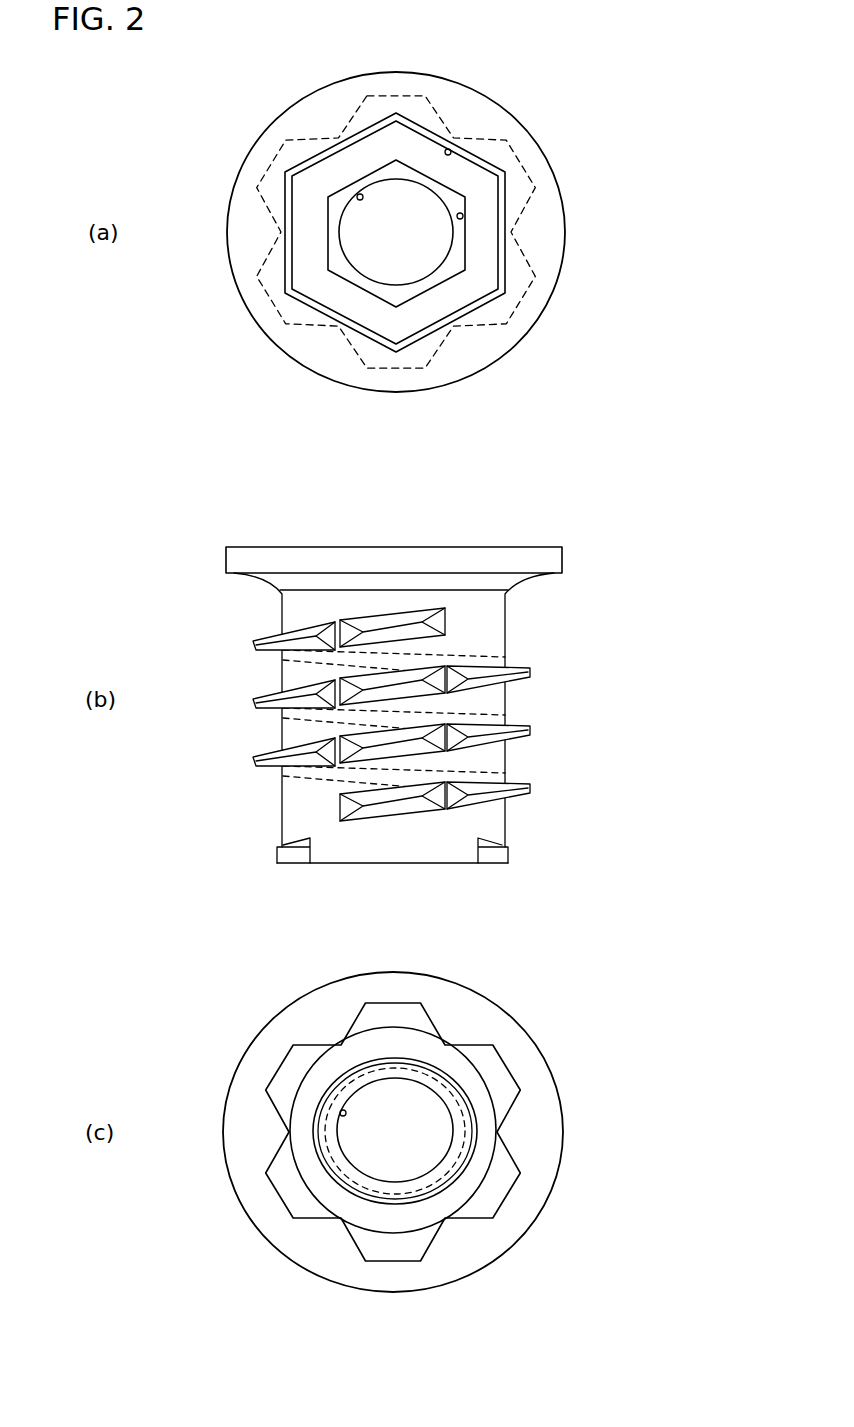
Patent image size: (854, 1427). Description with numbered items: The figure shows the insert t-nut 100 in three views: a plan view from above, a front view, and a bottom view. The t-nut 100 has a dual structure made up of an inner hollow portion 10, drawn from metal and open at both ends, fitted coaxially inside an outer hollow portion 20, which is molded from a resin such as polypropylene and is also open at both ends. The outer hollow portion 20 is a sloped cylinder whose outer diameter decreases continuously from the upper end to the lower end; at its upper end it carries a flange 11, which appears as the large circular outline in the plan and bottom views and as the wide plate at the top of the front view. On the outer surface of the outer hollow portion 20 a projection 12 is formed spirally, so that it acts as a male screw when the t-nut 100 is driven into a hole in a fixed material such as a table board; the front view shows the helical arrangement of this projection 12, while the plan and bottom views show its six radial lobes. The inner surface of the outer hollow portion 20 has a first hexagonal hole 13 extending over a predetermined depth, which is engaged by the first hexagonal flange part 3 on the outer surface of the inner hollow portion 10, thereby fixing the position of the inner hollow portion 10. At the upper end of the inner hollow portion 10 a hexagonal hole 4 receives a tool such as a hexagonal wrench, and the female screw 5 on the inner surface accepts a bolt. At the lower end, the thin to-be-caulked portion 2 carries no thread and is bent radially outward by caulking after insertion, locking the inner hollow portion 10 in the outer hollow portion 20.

The to-be-caulked portion 2 is at (342, 1167).
The first hexagonal flange part 3 is at (488, 257).
The hexagonal hole 4 is at (463, 215).
The female screw 5 is at (360, 194).
The inner hollow portion 10 is at (446, 321).
The flange 11 is at (243, 251).
The projection 12 is at (405, 97).
The first hexagonal hole 13 is at (451, 150).
The outer hollow portion 20 is at (567, 557).
The insert t-nut 100 is at (710, 252).